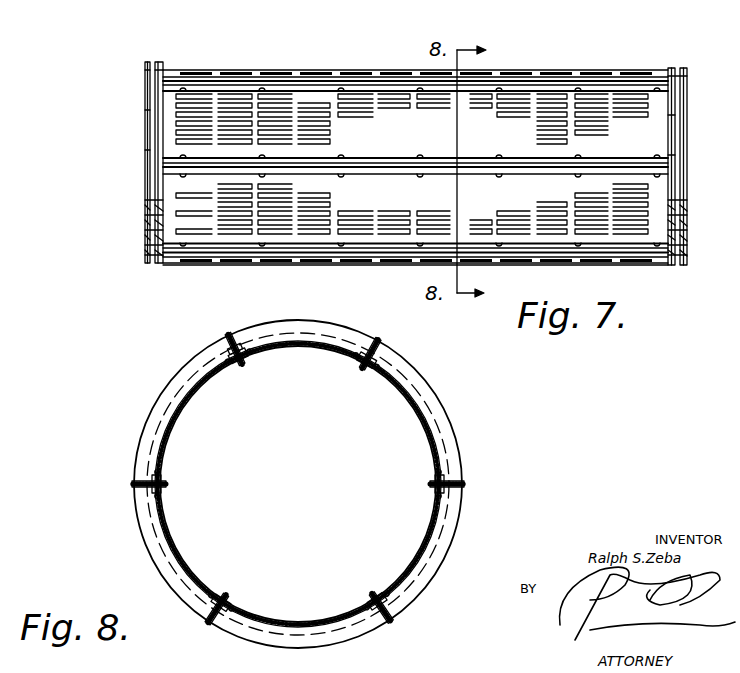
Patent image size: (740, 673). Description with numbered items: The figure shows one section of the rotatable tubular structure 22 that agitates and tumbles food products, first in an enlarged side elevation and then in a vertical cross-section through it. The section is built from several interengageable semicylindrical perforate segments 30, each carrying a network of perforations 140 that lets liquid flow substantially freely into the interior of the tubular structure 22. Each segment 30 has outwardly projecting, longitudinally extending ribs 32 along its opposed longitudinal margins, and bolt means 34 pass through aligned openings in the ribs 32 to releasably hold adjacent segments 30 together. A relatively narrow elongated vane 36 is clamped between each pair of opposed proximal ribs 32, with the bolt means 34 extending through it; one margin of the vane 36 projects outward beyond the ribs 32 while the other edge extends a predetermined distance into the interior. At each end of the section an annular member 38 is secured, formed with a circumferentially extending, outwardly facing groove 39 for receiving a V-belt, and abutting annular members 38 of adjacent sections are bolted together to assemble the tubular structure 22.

In FIG. 7, the tubular structure 22 is at (287, 70).
In FIG. 7, the perforate segment 30 is at (658, 113).
In FIG. 8, the perforate segment 30 is at (177, 411).
In FIG. 7, the rib 32 is at (664, 163).
In FIG. 8, the rib 32 is at (222, 347).
In FIG. 8, the bolt means 34 is at (240, 338).
In FIG. 7, the vane 36 is at (667, 178).
In FIG. 8, the vane 36 is at (458, 485).
In FIG. 7, the annular member 38 is at (148, 95).
In FIG. 8, the annular member 38 is at (455, 511).
In FIG. 7, the groove 39 is at (150, 63).
In FIG. 7, the perforations 140 is at (565, 102).